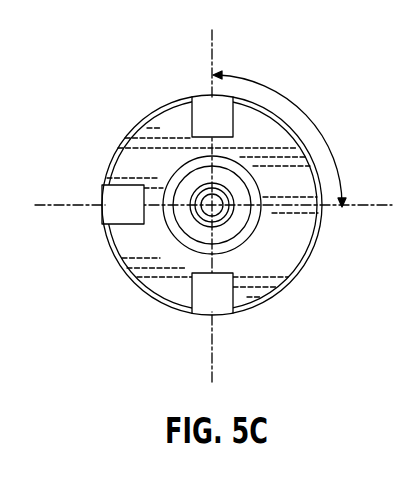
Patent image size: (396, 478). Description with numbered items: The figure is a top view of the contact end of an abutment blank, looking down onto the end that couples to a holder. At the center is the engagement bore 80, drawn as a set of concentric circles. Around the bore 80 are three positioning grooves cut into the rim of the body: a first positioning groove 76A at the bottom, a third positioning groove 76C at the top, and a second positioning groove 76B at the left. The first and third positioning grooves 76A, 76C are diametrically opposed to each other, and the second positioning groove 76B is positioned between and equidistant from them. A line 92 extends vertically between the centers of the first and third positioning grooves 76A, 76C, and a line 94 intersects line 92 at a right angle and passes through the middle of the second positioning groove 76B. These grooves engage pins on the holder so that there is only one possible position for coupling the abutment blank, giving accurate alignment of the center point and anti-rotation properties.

The first positioning groove 76A is at (202, 303).
The second positioning groove 76B is at (112, 195).
The third positioning groove 76C is at (203, 98).
The engagement bore 80 is at (228, 231).
The line 92 is at (215, 65).
The line 94 is at (75, 207).